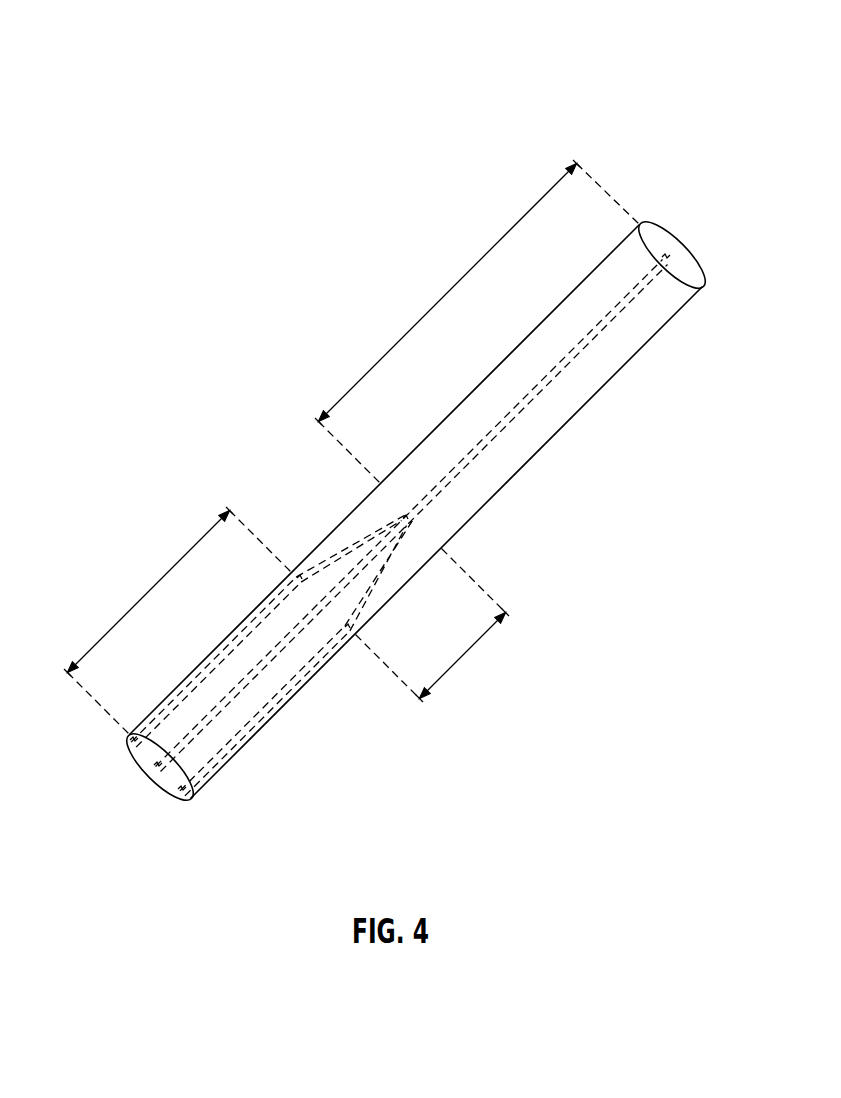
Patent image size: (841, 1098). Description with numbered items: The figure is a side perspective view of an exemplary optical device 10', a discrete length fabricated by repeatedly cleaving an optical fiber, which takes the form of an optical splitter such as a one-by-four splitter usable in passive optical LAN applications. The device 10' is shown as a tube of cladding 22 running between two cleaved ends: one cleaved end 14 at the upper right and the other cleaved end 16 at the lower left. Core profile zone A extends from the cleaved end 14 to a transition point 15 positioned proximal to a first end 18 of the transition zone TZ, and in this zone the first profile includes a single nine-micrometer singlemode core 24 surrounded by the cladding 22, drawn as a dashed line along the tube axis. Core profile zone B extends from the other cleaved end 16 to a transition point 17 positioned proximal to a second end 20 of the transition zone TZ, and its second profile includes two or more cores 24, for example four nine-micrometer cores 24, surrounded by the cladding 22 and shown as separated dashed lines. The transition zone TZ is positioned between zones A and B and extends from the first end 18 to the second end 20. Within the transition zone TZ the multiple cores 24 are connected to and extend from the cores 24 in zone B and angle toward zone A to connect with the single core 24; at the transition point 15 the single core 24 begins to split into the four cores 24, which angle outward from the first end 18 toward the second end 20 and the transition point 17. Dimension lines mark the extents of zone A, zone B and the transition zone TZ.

The optical device 10' is at (384, 437).
The cleaved end 14 is at (688, 238).
The transition point 15 is at (378, 472).
The other cleaved end 16 is at (150, 790).
The transition point 17 is at (288, 574).
The first end of transition zone 18 is at (447, 552).
The second end of transition zone 20 is at (357, 640).
The cladding 22 is at (575, 415).
The core 24 is at (497, 438).
The core profile zone A is at (447, 295).
The core profile zone B is at (145, 592).
The transition zone TZ is at (465, 655).